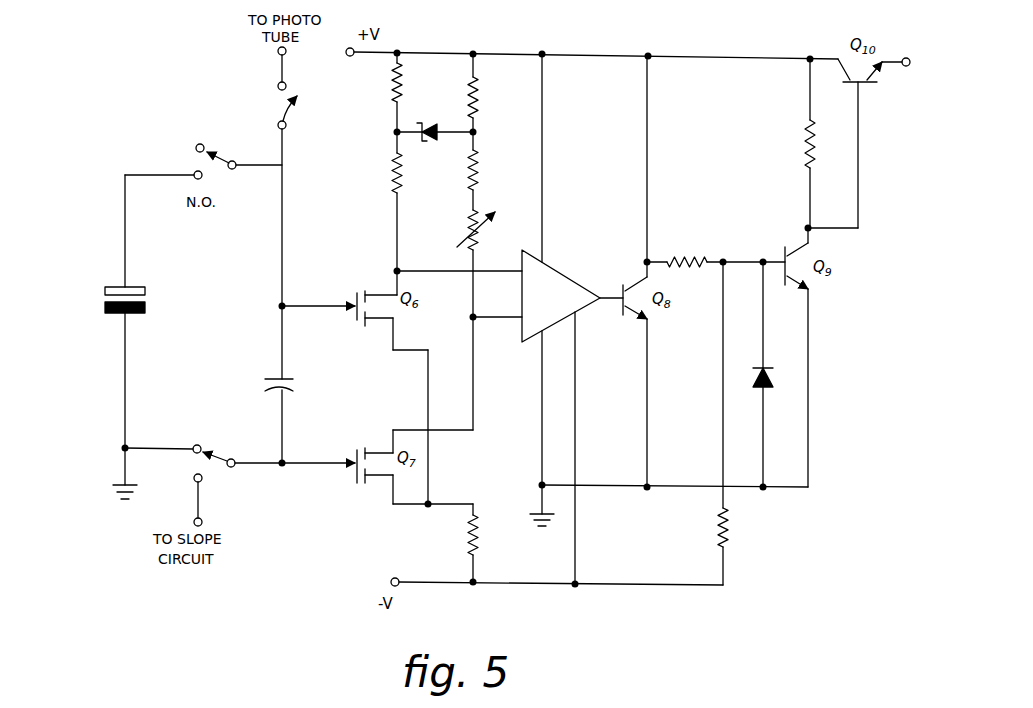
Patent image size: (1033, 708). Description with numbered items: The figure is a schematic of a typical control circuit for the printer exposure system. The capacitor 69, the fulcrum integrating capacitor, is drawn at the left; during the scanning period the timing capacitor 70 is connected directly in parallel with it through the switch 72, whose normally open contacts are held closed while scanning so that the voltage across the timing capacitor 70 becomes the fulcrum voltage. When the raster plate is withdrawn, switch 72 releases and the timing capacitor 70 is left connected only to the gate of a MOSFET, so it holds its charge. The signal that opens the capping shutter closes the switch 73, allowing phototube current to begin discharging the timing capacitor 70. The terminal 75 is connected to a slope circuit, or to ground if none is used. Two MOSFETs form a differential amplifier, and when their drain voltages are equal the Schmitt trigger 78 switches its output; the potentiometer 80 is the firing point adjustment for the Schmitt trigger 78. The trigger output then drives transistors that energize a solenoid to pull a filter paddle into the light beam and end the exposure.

The capacitor 69 is at (105, 288).
The timing capacitor 70 is at (293, 379).
The switch 72 is at (222, 150).
The switch 73 is at (299, 104).
The terminal 75 is at (204, 518).
The Schmitt trigger 78 is at (555, 307).
The potentiometer 80 is at (467, 218).